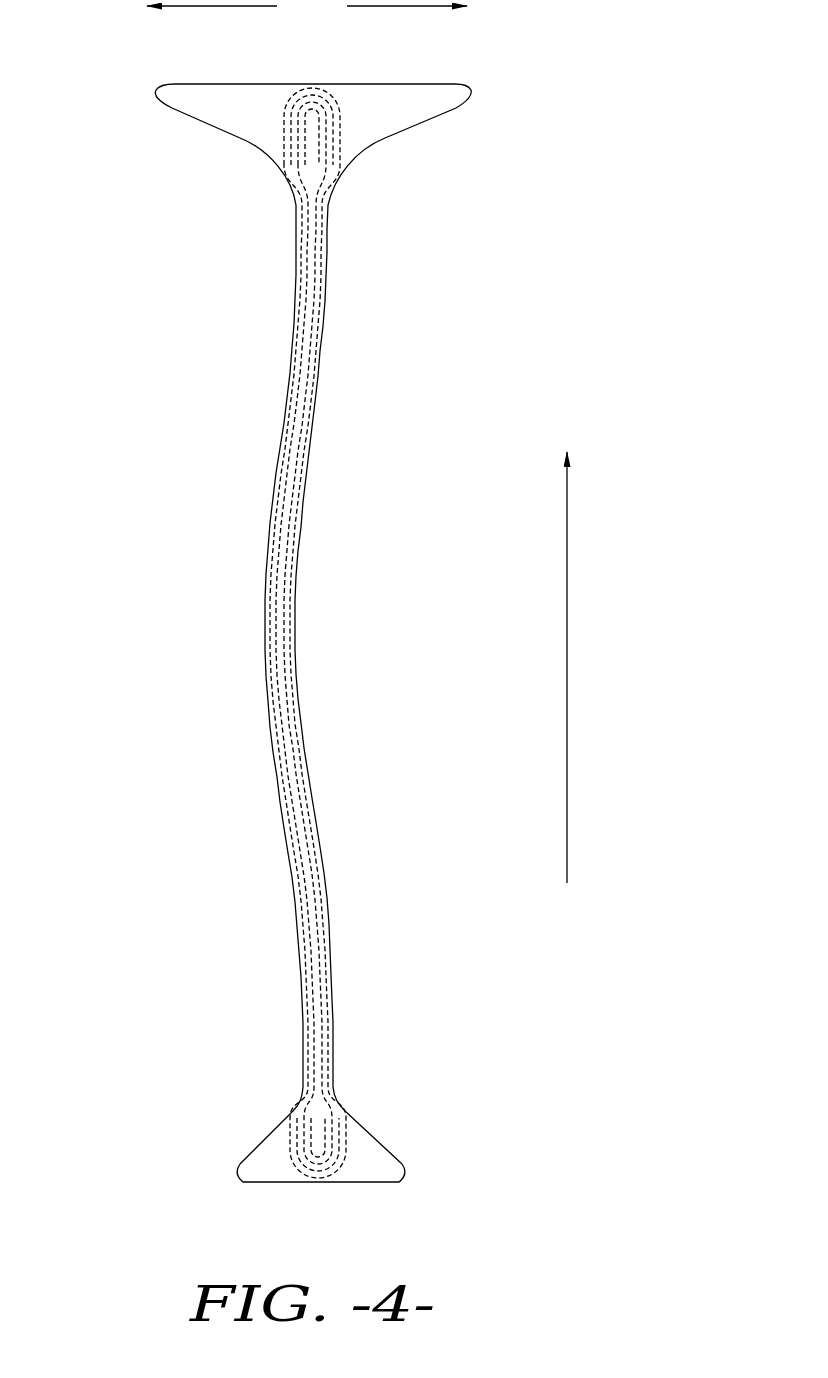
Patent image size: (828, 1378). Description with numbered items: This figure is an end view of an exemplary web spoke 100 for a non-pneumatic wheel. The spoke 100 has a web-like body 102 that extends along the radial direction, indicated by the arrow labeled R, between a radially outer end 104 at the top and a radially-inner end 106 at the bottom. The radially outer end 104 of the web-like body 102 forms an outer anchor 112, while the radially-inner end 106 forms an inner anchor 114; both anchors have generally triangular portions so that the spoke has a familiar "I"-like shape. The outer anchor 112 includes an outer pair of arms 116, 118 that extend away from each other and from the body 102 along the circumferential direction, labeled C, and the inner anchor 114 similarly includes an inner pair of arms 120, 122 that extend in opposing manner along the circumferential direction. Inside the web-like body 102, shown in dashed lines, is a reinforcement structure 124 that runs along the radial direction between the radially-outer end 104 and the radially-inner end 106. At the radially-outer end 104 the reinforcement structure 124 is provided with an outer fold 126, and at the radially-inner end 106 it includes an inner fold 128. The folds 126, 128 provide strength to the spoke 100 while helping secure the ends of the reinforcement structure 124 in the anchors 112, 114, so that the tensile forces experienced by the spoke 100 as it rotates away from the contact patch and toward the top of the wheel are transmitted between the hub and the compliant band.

The spoke 100 is at (578, 96).
The web-like body 102 is at (270, 528).
The radially outer end 104 is at (125, 98).
The radially-inner end 106 is at (207, 1170).
The outer anchor 112 is at (365, 103).
The inner anchor 114 is at (367, 1148).
The arm 116 is at (190, 113).
The arm 118 is at (428, 117).
The arm 120 is at (267, 1133).
The arm 122 is at (410, 1148).
The reinforcement structure 124 is at (285, 573).
The outer fold 126 is at (275, 112).
The inner fold 128 is at (283, 1158).